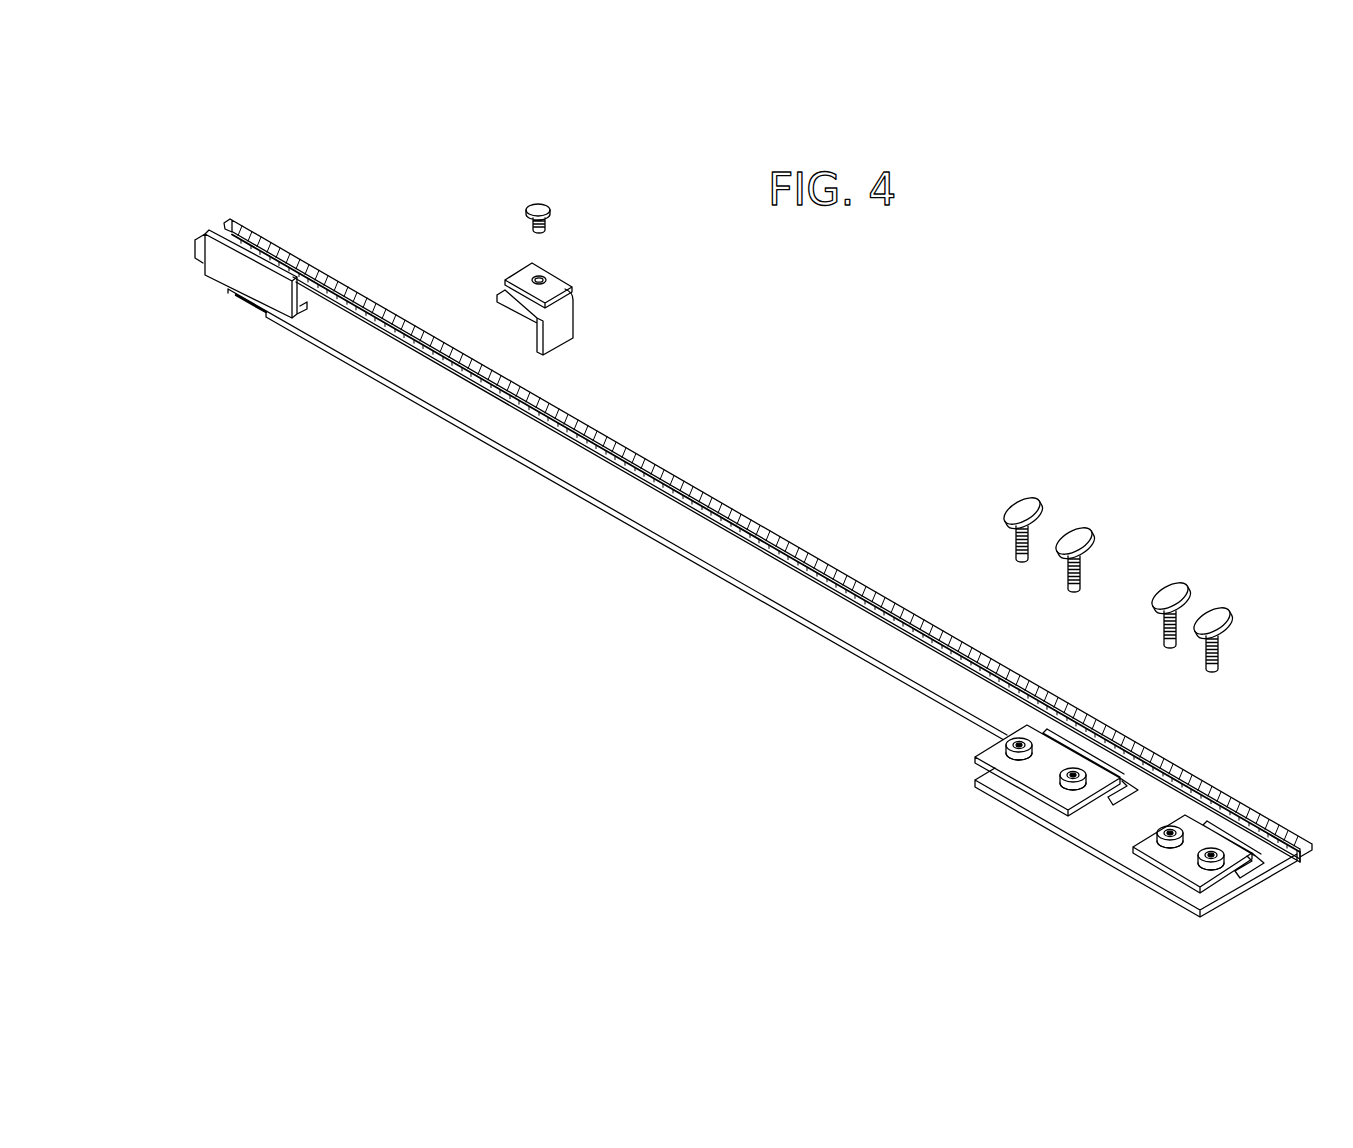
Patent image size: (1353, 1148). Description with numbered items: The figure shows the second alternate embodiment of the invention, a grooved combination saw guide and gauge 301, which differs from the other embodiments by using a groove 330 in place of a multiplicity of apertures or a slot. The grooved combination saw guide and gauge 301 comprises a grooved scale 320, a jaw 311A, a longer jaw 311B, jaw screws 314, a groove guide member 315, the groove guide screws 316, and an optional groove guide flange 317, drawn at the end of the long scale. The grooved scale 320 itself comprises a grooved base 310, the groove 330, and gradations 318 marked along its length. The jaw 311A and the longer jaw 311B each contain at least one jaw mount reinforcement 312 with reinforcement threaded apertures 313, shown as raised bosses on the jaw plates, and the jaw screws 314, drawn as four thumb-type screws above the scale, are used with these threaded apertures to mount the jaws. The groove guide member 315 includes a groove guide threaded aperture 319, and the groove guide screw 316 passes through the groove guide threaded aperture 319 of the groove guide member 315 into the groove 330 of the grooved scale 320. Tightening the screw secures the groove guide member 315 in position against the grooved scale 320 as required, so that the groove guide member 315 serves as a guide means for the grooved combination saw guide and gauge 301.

The grooved combination saw guide and gauge 301 is at (768, 540).
The grooved base 310 is at (1073, 840).
The jaw 311A is at (1170, 873).
The longer jaw 311B is at (975, 757).
The jaw mount reinforcement 312 is at (1007, 744).
The reinforcement threaded apertures 313 is at (1007, 753).
The jaw screws 314 is at (1032, 500).
The groove guide member 315 is at (558, 325).
The groove guide screw 316 is at (552, 205).
The groove guide flange 317 is at (228, 290).
The gradations 318 is at (740, 512).
The groove guide threaded aperture 319 is at (530, 278).
The grooved scale 320 is at (755, 598).
The groove 330 is at (897, 605).